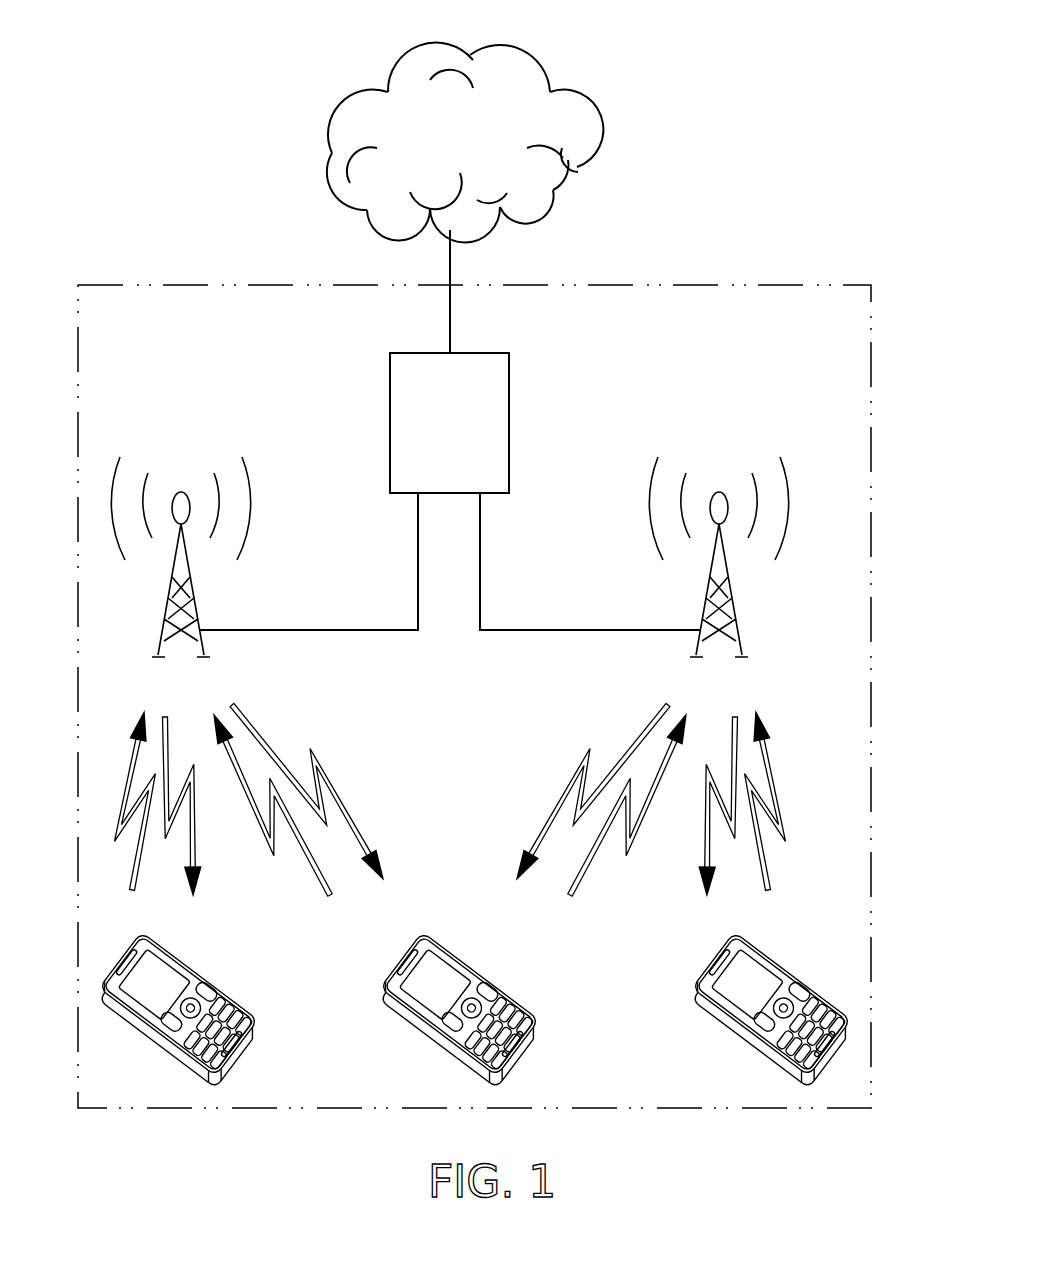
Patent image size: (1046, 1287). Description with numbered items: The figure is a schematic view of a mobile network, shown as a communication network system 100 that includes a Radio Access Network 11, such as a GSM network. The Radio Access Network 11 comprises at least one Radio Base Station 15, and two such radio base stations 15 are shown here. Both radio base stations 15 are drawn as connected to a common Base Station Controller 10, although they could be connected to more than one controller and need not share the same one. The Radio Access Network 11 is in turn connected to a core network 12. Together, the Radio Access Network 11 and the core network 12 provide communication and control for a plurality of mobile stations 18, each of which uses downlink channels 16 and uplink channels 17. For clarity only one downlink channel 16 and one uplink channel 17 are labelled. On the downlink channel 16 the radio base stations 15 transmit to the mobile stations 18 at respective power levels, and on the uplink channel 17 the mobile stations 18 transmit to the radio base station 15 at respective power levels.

The communication network system 100 is at (762, 72).
The Radio Access Network 11 is at (763, 285).
The core network 12 is at (527, 148).
The Base Station Controller 10 is at (478, 408).
The Radio Base Station 15 is at (197, 607).
The downlink channel 16 is at (343, 807).
The uplink channel 17 is at (138, 870).
The mobile station 18 is at (248, 1057).